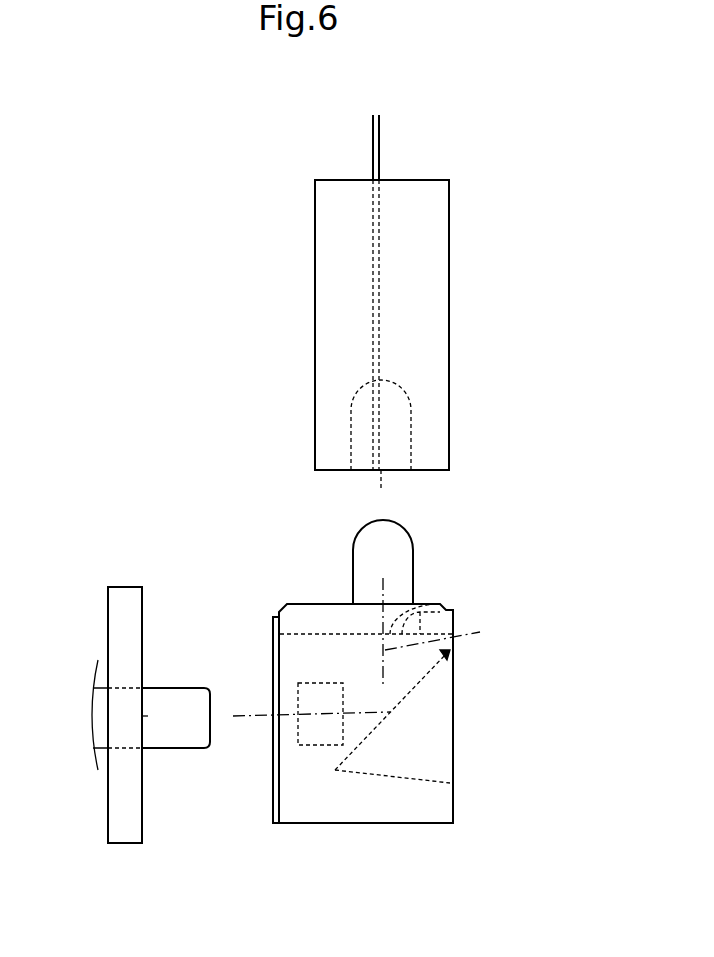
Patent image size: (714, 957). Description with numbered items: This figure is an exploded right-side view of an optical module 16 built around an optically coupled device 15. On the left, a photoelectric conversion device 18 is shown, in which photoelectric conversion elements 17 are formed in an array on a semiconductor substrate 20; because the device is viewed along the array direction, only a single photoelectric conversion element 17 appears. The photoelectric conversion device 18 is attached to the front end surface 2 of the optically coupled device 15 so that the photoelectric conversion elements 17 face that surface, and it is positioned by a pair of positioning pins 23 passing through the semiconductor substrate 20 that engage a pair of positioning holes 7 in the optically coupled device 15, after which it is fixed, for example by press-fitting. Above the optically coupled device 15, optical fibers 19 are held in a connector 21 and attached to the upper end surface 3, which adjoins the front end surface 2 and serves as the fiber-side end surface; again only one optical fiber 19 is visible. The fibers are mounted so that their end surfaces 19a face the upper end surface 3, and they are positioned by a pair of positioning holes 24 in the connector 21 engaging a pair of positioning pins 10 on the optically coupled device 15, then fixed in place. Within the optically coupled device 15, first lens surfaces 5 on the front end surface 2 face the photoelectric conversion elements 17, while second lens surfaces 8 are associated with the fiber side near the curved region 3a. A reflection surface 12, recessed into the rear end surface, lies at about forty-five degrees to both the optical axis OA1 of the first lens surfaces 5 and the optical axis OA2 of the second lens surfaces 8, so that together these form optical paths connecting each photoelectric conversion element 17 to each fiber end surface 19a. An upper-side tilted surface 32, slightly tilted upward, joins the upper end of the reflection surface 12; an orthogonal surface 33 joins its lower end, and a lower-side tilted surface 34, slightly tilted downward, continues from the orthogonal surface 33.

The optical module 16 is at (80, 264).
The optical fibers 19 is at (372, 143).
The connector 21 is at (315, 318).
The positioning holes 24 is at (404, 470).
The end surfaces 19a is at (381, 488).
The positioning pins 10 is at (352, 562).
The optically coupled device 15 is at (278, 614).
The upper end surface 3 is at (280, 605).
The front end surface 2 is at (273, 800).
The curved light incident surface 3a is at (450, 605).
The second lens surfaces 8 is at (410, 603).
The optical axis of the second lens surfaces OA2 is at (464, 634).
The upper-side tilted surface 32 is at (455, 668).
The orthogonal surface 33 is at (340, 768).
The lower-side tilted surface 34 is at (413, 778).
The reflection surface 12 is at (390, 710).
The optical axis of the first lens surfaces OA1 is at (273, 720).
The positioning holes 7 is at (300, 697).
The first lens surfaces 5 is at (298, 724).
The photoelectric conversion device 18 is at (120, 587).
The positioning pins 23 is at (162, 688).
The photoelectric conversion elements 17 is at (145, 718).
The semiconductor substrate 20 is at (126, 843).